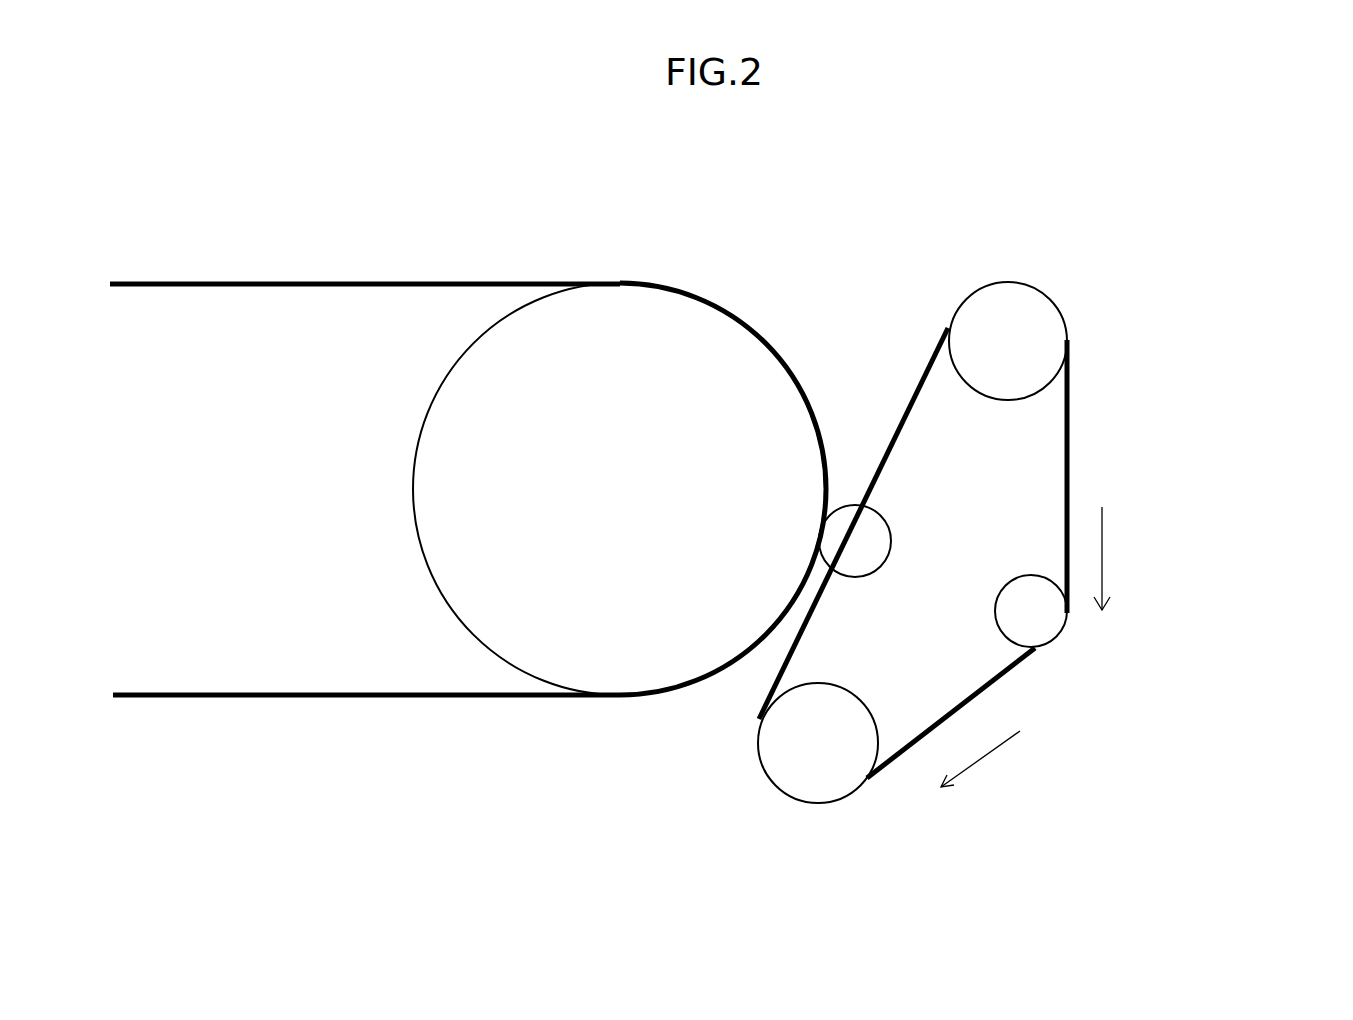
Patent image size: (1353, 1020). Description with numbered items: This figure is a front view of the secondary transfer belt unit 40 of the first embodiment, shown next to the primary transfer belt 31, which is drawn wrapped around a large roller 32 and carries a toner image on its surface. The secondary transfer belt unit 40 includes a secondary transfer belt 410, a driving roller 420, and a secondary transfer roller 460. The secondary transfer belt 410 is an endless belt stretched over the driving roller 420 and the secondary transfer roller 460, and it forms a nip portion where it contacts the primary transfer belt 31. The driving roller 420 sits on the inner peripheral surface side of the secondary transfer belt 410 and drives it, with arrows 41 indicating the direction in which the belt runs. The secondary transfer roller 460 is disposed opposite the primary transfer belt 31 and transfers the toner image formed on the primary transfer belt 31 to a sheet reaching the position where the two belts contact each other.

The primary transfer belt 31 is at (493, 283).
The drive roller 32 is at (647, 317).
The secondary transfer belt unit 40 is at (1230, 210).
The rotation direction of secondary transfer belt 41 is at (1102, 557).
The secondary transfer belt 410 is at (1070, 425).
The driving roller 420 is at (1015, 300).
The secondary transfer roller 460 is at (875, 533).